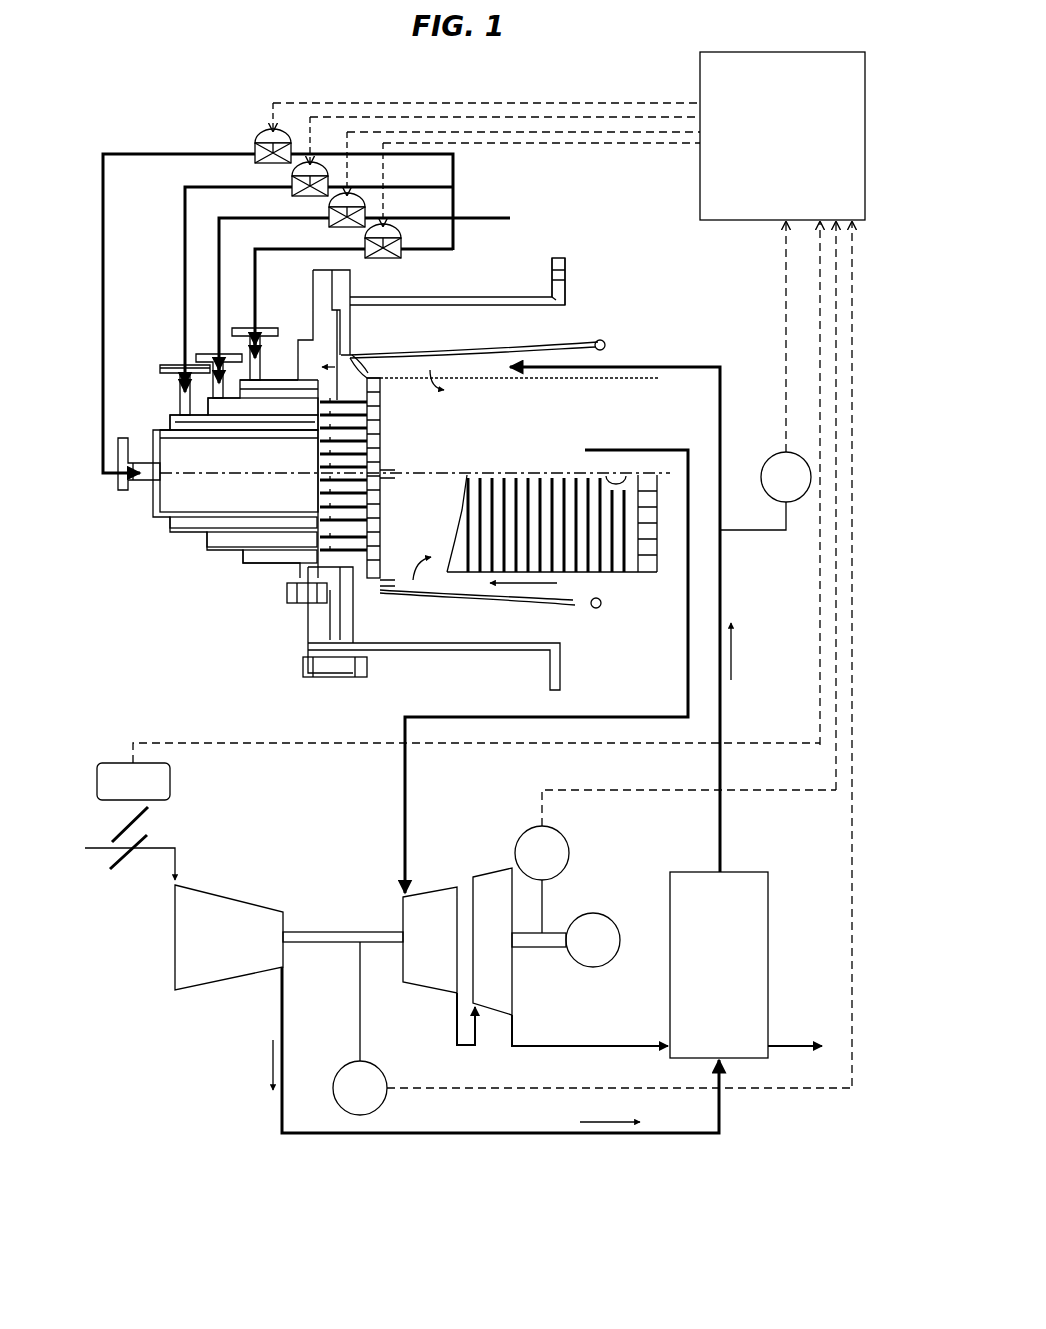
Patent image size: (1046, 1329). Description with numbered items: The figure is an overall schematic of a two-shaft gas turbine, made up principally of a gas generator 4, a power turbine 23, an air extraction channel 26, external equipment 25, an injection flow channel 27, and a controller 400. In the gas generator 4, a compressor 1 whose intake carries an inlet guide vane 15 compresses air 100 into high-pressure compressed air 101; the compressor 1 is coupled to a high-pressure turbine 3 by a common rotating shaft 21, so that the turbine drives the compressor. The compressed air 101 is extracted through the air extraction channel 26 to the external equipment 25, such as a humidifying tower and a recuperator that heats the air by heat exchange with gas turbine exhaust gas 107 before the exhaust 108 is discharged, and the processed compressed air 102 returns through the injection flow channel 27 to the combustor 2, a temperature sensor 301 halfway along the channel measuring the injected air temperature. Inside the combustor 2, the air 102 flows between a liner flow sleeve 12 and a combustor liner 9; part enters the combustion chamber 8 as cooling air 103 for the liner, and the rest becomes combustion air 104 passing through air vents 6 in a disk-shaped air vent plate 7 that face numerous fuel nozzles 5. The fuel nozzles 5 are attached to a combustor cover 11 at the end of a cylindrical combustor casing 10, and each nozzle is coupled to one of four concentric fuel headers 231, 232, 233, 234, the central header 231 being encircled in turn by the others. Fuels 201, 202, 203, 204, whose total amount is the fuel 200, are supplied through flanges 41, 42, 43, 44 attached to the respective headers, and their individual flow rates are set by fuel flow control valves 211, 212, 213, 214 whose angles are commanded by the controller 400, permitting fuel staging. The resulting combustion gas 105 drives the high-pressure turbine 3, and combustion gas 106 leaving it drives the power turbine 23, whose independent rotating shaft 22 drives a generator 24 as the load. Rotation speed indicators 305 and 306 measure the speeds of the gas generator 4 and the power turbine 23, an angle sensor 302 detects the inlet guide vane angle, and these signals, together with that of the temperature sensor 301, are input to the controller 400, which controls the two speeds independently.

The compressor 1 is at (229, 937).
The combustor 2 is at (457, 281).
The high-pressure turbine 3 is at (430, 940).
The gas generator 4 is at (345, 903).
The fuel nozzles 5 is at (347, 402).
The air vents 6 is at (395, 478).
The air vent plate 7 is at (381, 400).
The combustion chamber 8 is at (373, 474).
The combustor liner 9 is at (568, 381).
The combustor casing 10 is at (495, 298).
The combustor cover 11 is at (320, 290).
The liner flow sleeve 12 is at (520, 598).
The inlet guide vane 15 is at (114, 900).
The rotating shaft 21 is at (320, 948).
The rotating shaft 22 is at (528, 950).
The power turbine 23 is at (492, 941).
The generator 24 is at (606, 913).
The external equipment 25 is at (719, 965).
The air extraction channel 26 is at (282, 1004).
The injection flow channel 27 is at (720, 388).
The flange 41 is at (116, 492).
The flange 42 is at (160, 367).
The flange 43 is at (221, 354).
The flange 44 is at (260, 332).
The air 100 is at (90, 840).
The compressed air 101 is at (272, 1066).
The compressed air 102 is at (741, 658).
The cooling air 103 is at (444, 475).
The combustion air 104 is at (345, 563).
The combustion gas 105 is at (405, 862).
The combustion gas 106 is at (457, 1025).
The exhaust gas 107 is at (530, 1044).
The exhaust 108 is at (795, 1033).
The fuel 200 is at (540, 222).
The fuel 201 is at (164, 151).
The fuel 202 is at (194, 187).
The fuel 203 is at (221, 218).
The fuel 204 is at (254, 249).
The fuel flow control valve 211 is at (252, 136).
The fuel flow control valve 212 is at (284, 190).
The fuel flow control valve 213 is at (323, 219).
The fuel flow control valve 214 is at (360, 250).
The fuel header 231 is at (415, 496).
The fuel header 232 is at (216, 445).
The fuel header 233 is at (263, 398).
The fuel header 234 is at (302, 389).
The temperature sensor 301 is at (770, 460).
The angle sensor 302 is at (172, 777).
The rotation speed indicator 305 is at (336, 1072).
The rotation speed indicator 306 is at (569, 858).
The controller 400 is at (569, 569).